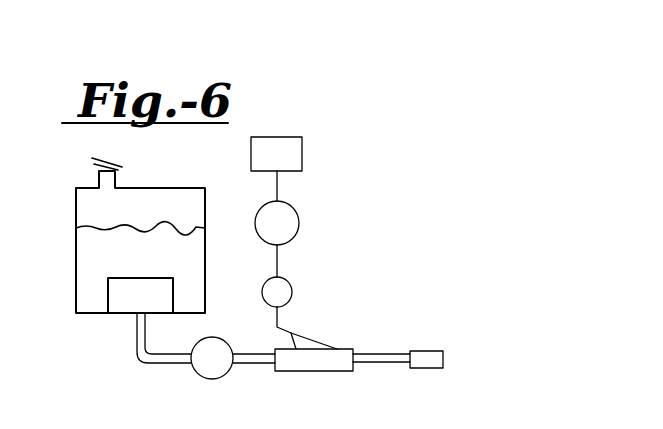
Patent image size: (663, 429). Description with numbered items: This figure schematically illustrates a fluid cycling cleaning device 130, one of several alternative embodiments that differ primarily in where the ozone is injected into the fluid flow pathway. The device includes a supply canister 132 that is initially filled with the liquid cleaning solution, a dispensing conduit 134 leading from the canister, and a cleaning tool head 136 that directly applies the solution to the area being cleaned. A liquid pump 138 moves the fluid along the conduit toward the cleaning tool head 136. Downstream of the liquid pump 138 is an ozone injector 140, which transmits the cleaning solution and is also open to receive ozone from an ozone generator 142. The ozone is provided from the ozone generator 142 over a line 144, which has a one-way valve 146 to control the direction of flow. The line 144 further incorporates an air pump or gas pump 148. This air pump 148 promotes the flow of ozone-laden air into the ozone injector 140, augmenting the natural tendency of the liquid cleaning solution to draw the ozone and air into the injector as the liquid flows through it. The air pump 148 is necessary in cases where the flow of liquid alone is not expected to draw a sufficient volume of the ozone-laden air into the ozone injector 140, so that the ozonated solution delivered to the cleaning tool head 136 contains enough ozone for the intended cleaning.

The fluid cycling cleaning device 130 is at (305, 192).
The supply canister 132 is at (76, 252).
The dispensing conduit 134 is at (137, 334).
The cleaning tool head 136 is at (421, 351).
The liquid pump 138 is at (201, 378).
The ozone injector 140 is at (303, 371).
The ozone generator 142 is at (283, 137).
The line 144 is at (292, 332).
The one-way valve 146 is at (290, 284).
The air pump 148 is at (299, 220).